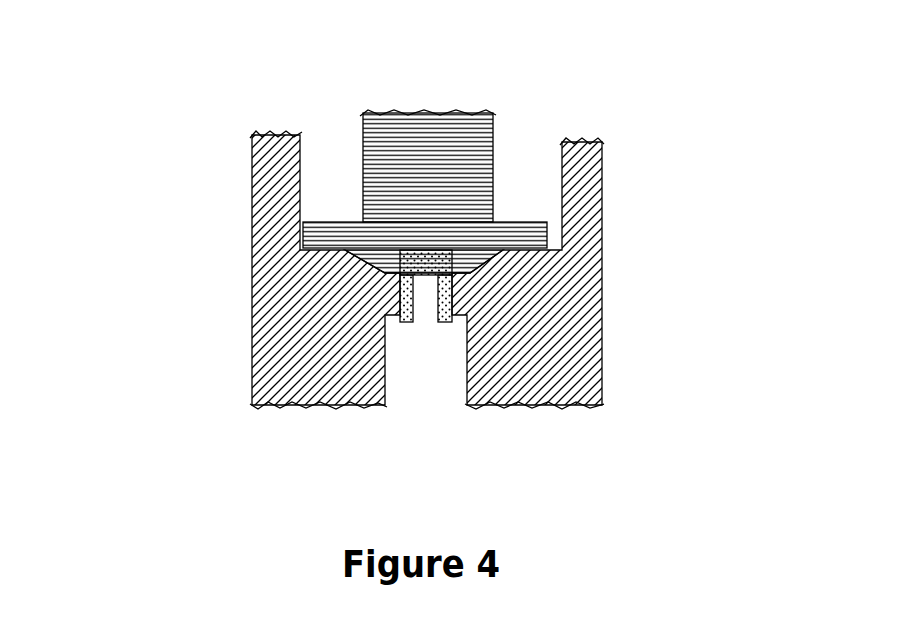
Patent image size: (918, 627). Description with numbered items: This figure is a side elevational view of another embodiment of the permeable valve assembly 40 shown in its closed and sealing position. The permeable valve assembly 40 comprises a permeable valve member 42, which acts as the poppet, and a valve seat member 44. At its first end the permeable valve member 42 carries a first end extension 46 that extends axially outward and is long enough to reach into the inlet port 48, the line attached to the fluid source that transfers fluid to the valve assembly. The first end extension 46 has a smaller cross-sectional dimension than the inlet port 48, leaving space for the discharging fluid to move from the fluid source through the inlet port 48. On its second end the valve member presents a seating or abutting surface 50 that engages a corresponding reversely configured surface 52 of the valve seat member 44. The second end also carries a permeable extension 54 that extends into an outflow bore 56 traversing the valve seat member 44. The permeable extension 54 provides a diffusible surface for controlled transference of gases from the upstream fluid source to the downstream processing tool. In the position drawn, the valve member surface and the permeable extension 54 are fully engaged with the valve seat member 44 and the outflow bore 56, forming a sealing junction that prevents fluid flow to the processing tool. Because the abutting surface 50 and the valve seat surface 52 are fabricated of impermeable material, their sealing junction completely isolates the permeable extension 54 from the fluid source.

The permeable valve assembly 40 is at (198, 145).
The permeable valve member 42 is at (432, 158).
The valve seat member 44 is at (305, 335).
The first end extension 46 is at (468, 115).
The inlet port 48 is at (340, 153).
The seating or abutting surface 50 is at (487, 265).
The reversely configured surface 52 is at (500, 267).
The permeable extension 54 is at (453, 293).
The outflow bore 56 is at (417, 380).